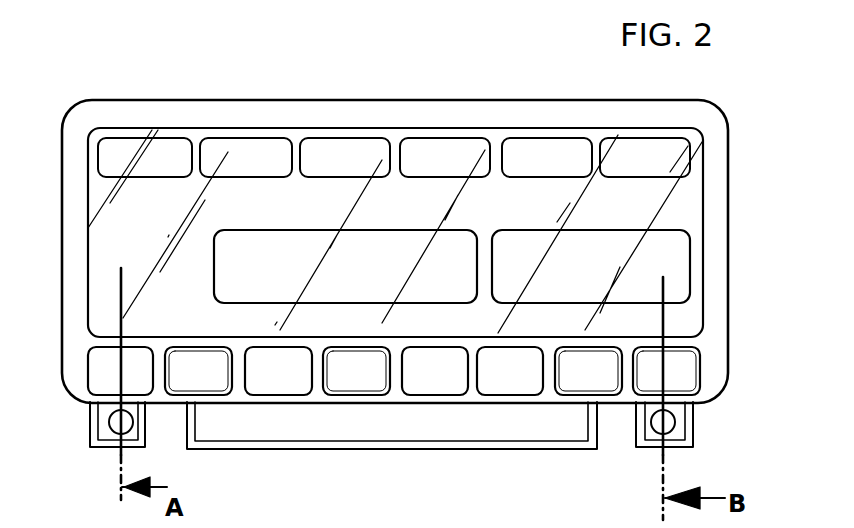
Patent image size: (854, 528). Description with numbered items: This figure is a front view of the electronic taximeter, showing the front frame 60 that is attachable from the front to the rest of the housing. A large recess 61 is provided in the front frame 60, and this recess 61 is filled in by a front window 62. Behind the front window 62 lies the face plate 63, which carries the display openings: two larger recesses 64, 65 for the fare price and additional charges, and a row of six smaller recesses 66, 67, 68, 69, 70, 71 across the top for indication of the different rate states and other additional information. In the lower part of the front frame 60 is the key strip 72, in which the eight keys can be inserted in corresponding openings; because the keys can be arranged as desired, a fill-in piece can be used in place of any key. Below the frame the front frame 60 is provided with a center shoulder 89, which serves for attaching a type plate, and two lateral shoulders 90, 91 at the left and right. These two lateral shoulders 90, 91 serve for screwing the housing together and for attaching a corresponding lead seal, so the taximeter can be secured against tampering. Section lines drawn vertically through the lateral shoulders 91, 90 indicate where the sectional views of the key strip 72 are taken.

The front frame 60 is at (698, 124).
The recess 61 is at (698, 222).
The front window 62 is at (691, 311).
The face plate 63 is at (112, 218).
The recess 64 is at (284, 238).
The recess 65 is at (528, 238).
The recess 66 is at (122, 148).
The recess 67 is at (223, 148).
The recess 68 is at (330, 150).
The recess 69 is at (440, 150).
The recess 70 is at (543, 145).
The recess 71 is at (637, 148).
The key strip 72 is at (731, 377).
The center shoulder 89 is at (461, 430).
The lateral shoulder 90 is at (683, 447).
The lateral shoulder 91 is at (93, 443).